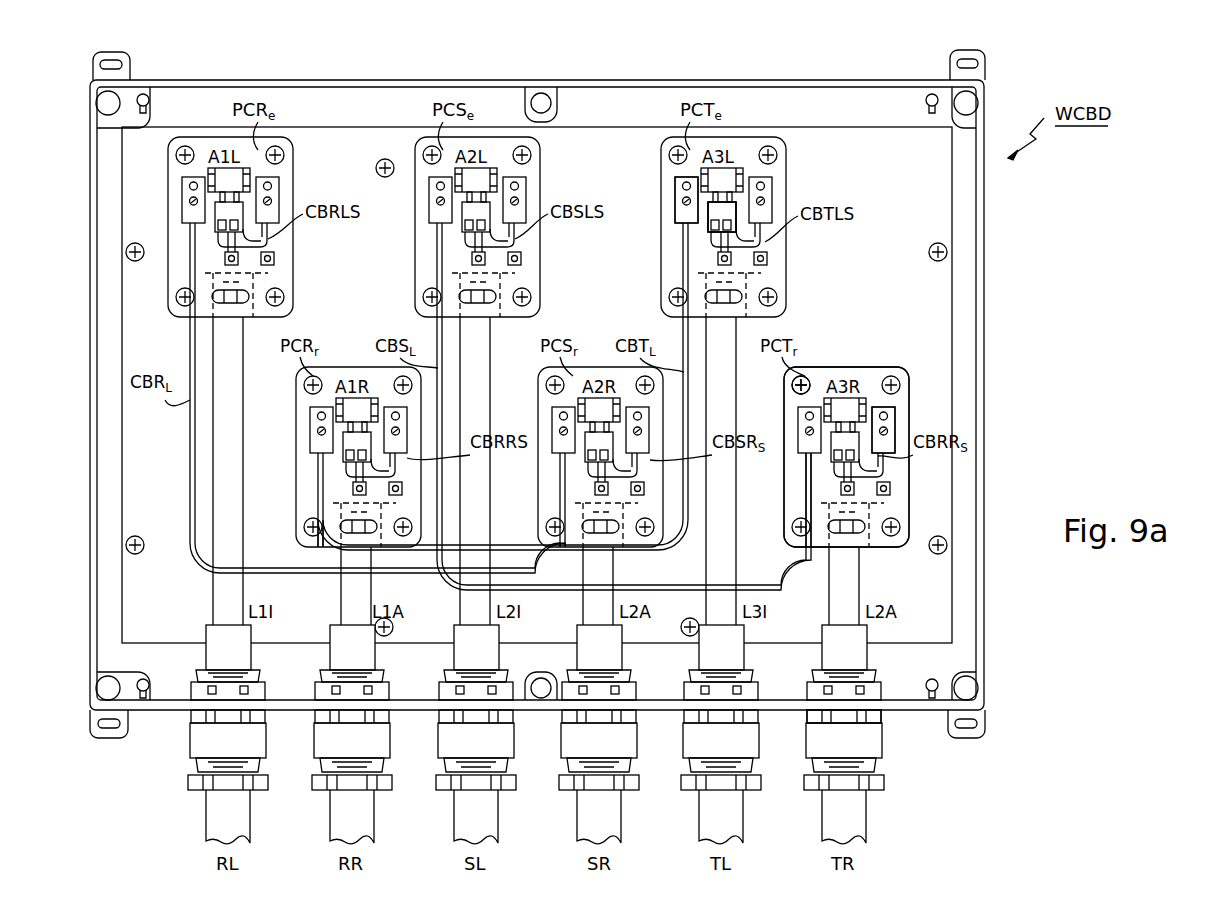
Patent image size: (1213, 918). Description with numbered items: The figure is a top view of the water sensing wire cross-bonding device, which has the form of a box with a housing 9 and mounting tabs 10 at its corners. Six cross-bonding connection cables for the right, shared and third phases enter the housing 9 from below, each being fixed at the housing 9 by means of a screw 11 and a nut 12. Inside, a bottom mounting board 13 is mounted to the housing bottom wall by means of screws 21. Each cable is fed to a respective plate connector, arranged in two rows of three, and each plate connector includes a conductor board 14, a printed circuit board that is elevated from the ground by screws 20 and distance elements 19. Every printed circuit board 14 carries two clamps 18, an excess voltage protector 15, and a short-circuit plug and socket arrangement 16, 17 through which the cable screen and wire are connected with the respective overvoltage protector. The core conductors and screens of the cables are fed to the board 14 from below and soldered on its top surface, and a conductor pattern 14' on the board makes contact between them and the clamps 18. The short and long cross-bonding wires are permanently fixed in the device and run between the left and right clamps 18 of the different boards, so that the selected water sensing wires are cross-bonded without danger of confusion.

The housing 9 is at (599, 80).
The mounting tab 10 is at (991, 73).
The screw 11 is at (868, 745).
The nut 12 is at (873, 703).
The bottom mounting board 13 is at (936, 216).
The conductor board 14 is at (903, 457).
The conductor pattern 14' is at (778, 500).
The excess voltage protector 15 is at (690, 178).
The plug 16 is at (740, 212).
The socket 17 is at (722, 217).
The clamp 18 is at (889, 432).
The distance element 19 is at (815, 378).
The screw 20 is at (898, 360).
The screw 21 is at (947, 258).